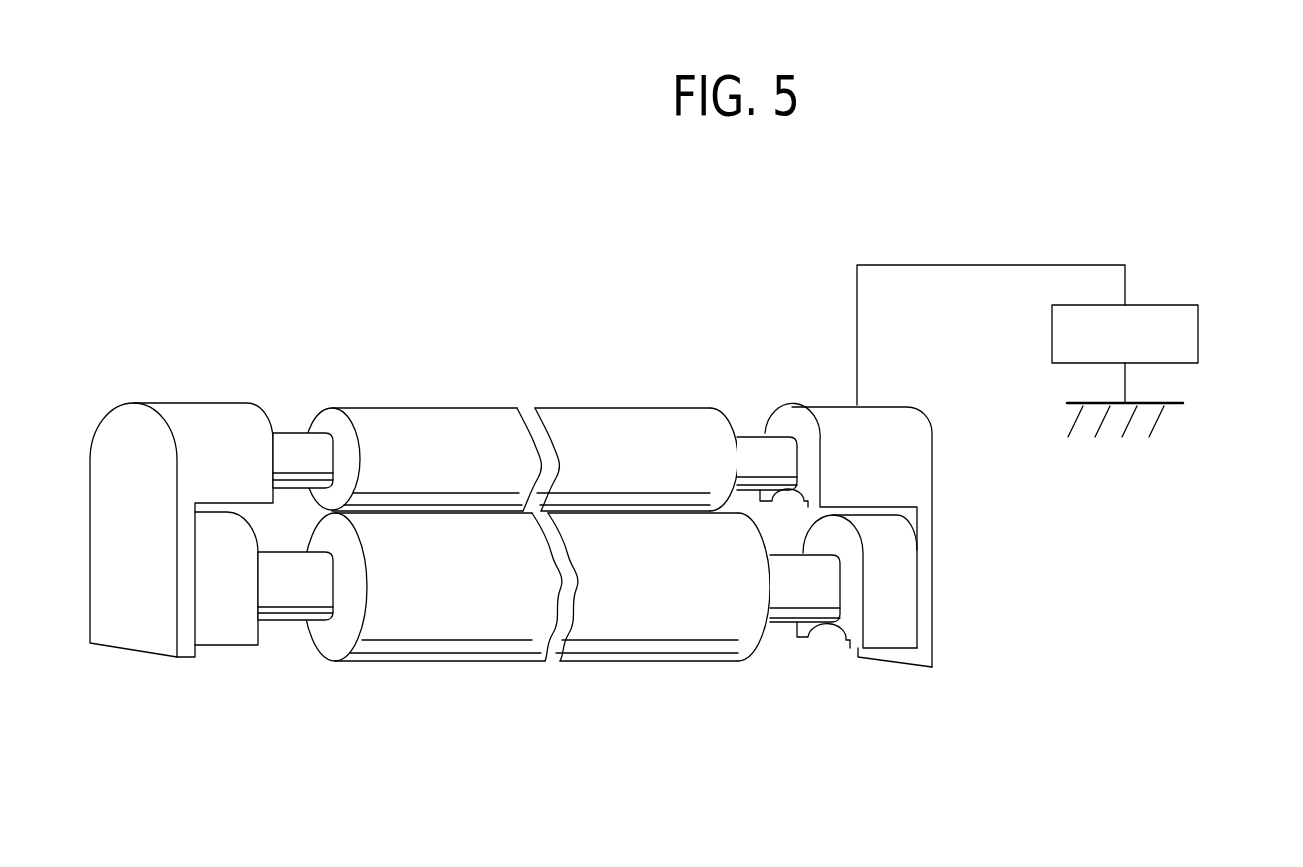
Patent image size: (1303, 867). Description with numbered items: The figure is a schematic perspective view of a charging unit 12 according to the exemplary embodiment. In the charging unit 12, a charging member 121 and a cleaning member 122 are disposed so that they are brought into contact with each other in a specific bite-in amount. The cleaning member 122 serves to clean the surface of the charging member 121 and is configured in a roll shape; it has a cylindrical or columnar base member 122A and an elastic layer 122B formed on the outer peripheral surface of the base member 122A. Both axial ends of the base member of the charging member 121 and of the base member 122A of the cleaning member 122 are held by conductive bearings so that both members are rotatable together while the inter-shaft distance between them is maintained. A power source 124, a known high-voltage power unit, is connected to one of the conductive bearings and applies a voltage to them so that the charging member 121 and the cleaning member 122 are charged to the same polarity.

The charging unit 12 is at (693, 237).
The charging member 121 is at (422, 663).
The cleaning member 122 is at (448, 407).
The base member 122A is at (290, 440).
The elastic layer 122B is at (368, 423).
The power source 124 is at (1198, 330).